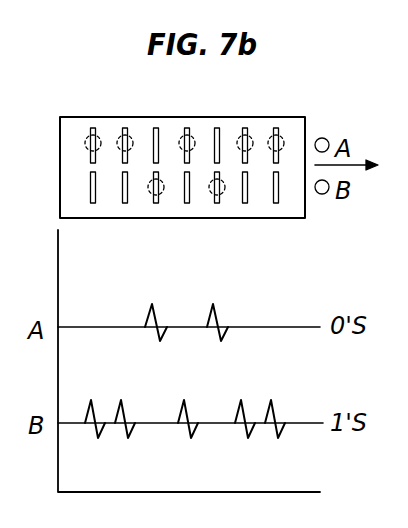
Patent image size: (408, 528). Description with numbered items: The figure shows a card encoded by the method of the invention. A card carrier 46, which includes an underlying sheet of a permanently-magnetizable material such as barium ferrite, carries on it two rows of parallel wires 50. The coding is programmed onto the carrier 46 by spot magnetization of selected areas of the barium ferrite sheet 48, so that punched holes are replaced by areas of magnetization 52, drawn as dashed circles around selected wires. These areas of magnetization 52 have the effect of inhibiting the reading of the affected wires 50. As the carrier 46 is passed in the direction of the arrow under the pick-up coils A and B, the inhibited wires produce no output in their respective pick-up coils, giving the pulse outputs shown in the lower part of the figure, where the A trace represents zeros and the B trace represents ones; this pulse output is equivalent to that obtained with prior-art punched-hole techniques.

The card carrier 46 is at (289, 112).
The barium ferrite sheet 48 is at (295, 133).
The parallel wires 50 is at (92, 131).
The areas of magnetization 52 is at (195, 148).